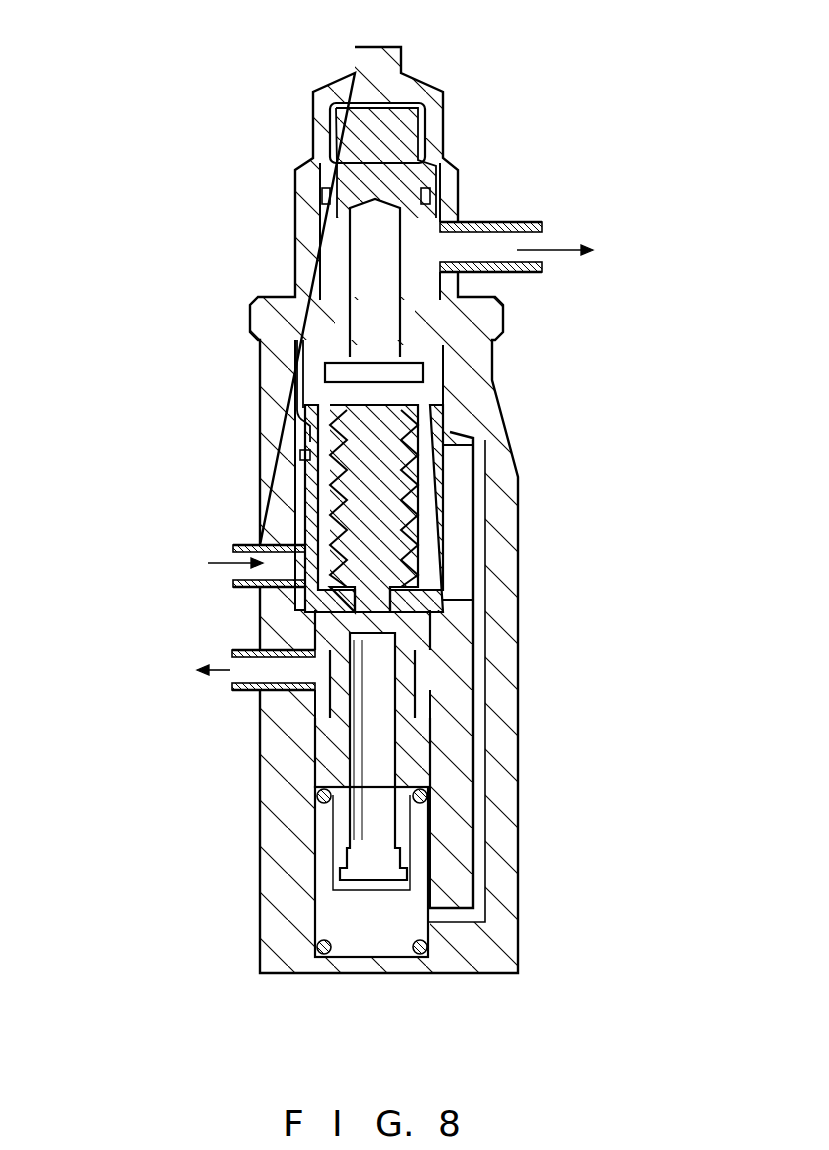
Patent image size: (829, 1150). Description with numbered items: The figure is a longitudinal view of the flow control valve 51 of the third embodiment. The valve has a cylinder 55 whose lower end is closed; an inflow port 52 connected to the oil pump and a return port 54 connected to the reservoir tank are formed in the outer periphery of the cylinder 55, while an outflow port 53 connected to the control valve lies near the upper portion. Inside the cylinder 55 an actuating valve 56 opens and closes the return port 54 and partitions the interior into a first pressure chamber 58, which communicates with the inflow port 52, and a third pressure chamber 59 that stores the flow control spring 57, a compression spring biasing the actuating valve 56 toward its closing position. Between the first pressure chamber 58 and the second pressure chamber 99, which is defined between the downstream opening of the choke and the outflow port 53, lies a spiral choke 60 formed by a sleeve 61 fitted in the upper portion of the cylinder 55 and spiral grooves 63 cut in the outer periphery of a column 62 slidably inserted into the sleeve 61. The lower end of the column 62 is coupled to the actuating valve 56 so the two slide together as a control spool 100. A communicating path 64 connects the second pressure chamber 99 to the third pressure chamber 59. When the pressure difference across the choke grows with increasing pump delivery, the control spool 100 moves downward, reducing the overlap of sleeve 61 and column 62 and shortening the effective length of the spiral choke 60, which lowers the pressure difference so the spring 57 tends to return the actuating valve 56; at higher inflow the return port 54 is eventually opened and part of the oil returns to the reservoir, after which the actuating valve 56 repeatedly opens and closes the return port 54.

The flow control valve 51 is at (455, 82).
The inflow port 52 is at (258, 585).
The outflow port 53 is at (452, 250).
The return port 54 is at (253, 693).
The cylinder 55 is at (267, 762).
The actuating valve 56 is at (322, 775).
The flow control spring 57 is at (318, 947).
The first pressure chamber 58 is at (425, 598).
The third pressure chamber 59 is at (375, 950).
The spiral choke 60 is at (328, 457).
The sleeve 61 is at (308, 392).
The column 62 is at (327, 515).
The spiral grooves 63 is at (332, 475).
The communicating path 64 is at (480, 505).
The second pressure chamber 99 is at (423, 378).
The control spool 100 is at (435, 638).